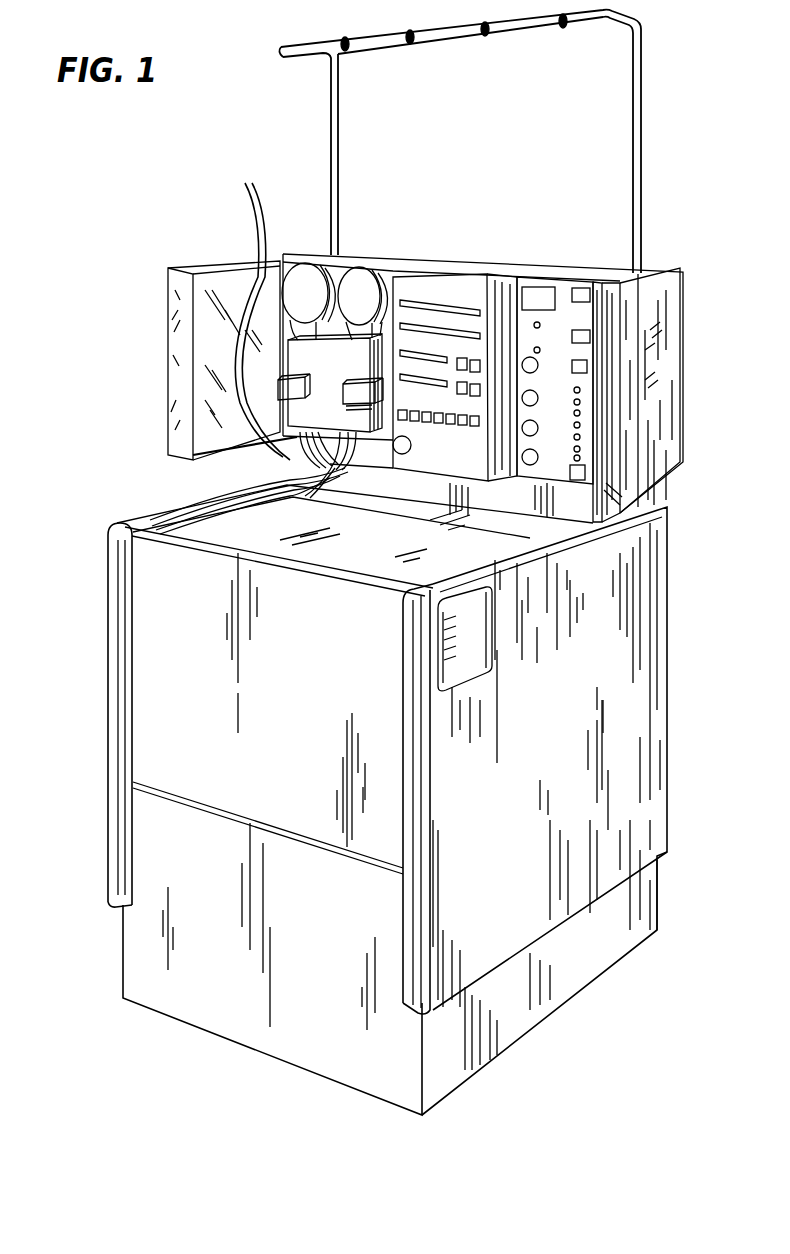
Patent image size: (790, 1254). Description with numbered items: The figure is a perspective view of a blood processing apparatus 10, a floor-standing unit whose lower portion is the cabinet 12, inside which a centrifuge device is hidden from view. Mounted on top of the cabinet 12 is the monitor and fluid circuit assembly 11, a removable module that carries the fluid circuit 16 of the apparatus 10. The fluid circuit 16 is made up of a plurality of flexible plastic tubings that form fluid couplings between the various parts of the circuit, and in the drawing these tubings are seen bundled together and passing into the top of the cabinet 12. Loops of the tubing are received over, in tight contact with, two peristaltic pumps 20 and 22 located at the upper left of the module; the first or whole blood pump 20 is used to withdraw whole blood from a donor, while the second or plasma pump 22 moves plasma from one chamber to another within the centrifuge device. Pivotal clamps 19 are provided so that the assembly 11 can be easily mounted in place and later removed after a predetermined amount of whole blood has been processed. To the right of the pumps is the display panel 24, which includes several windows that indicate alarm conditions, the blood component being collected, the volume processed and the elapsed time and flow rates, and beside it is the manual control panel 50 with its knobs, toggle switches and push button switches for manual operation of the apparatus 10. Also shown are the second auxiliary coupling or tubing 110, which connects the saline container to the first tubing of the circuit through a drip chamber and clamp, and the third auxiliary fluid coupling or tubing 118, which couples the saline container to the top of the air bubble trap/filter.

The blood processing apparatus 10 is at (94, 630).
The monitor and fluid circuit assembly 11 is at (332, 262).
The cabinet 12 is at (645, 729).
The fluid circuit 16 is at (286, 457).
The pivotal clamps 19 is at (290, 372).
The first or whole blood pump 20 is at (360, 285).
The second or plasma pump 22 is at (303, 273).
The display panel 24 is at (452, 290).
The manual control panel 50 is at (605, 300).
The second auxiliary coupling or tubing 110 is at (248, 336).
The third auxiliary fluid coupling or tubing 118 is at (272, 234).